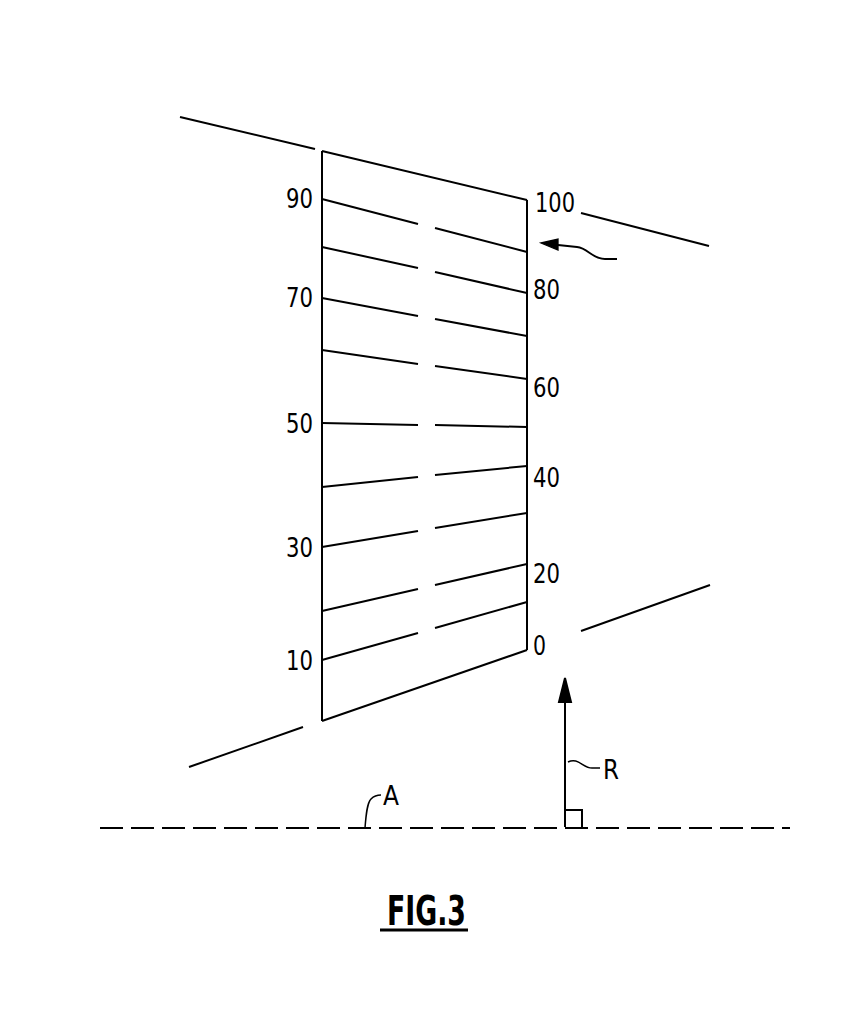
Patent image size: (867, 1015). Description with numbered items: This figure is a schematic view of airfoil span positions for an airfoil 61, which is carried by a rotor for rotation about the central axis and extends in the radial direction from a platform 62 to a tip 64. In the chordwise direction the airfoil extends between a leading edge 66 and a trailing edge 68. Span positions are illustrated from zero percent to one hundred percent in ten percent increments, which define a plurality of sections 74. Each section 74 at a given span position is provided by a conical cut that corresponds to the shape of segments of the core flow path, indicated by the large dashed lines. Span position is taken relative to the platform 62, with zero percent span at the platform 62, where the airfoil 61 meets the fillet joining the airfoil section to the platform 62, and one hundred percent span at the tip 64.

The airfoil 61 is at (101, 72).
The platform 62 is at (413, 689).
The tip 64 is at (423, 175).
The leading edge 66 is at (322, 372).
The trailing edge 68 is at (527, 410).
The sections 74 is at (593, 257).